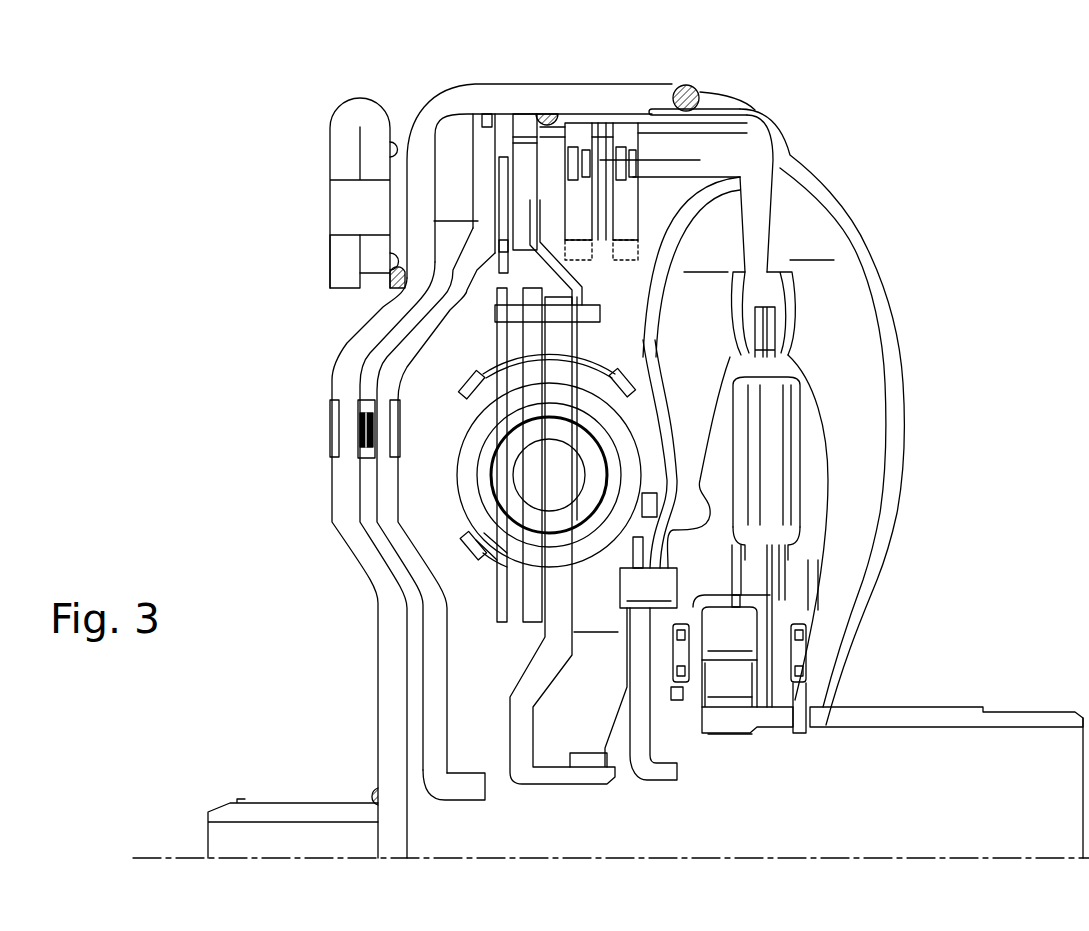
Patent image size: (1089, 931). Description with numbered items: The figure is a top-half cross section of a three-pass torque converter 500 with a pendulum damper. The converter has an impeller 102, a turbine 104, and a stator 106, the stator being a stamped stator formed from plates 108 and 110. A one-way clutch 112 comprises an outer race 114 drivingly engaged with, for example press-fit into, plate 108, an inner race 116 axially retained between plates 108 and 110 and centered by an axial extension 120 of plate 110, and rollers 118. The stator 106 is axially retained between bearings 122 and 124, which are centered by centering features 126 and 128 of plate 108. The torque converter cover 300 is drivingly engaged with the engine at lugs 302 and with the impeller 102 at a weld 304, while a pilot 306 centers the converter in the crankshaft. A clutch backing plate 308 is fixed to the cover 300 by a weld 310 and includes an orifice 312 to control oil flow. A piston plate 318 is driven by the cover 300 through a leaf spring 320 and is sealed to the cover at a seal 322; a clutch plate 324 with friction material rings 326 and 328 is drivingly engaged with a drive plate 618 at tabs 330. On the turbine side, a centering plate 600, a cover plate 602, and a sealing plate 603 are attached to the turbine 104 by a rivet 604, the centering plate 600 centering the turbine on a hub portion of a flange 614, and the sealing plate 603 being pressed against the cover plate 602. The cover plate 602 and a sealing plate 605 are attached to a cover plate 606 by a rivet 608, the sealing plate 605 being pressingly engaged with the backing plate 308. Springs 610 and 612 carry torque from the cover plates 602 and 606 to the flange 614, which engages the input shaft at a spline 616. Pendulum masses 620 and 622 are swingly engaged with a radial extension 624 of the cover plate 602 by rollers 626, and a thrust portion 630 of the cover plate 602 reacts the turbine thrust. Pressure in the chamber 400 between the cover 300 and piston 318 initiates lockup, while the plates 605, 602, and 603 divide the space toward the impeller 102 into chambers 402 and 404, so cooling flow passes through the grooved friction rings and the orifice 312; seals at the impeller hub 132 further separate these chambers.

The impeller 102 is at (813, 248).
The turbine 104 is at (707, 260).
The stator 106 is at (747, 432).
The plate 108 is at (800, 522).
The plate 110 is at (795, 447).
The one-way clutch 112 is at (773, 750).
The outer race 114 is at (743, 664).
The inner race 116 is at (731, 722).
The rollers 118 is at (731, 685).
The axial extension 120 is at (803, 702).
The bearing 122 is at (795, 690).
The bearing 124 is at (815, 565).
The centering feature 126 is at (790, 716).
The centering feature 128 is at (693, 690).
The impeller hub 132 is at (940, 717).
The torque converter cover 300 is at (662, 90).
The lugs 302 is at (362, 110).
The weld 304 is at (690, 94).
The pilot 306 is at (232, 808).
The clutch backing plate 308 is at (524, 122).
The weld 310 is at (533, 112).
The orifice 312 is at (590, 140).
The piston plate 318 is at (397, 538).
The leaf spring 320 is at (360, 400).
The seal 322 is at (482, 110).
The clutch plate 324 is at (513, 148).
The friction material ring 326 is at (518, 190).
The friction material ring 328 is at (510, 198).
The tabs 330 is at (500, 253).
The chamber 400 is at (457, 209).
The chamber 402 is at (568, 540).
The chamber 404 is at (813, 380).
The three-pass torque converter 500 is at (941, 134).
The centering plate 600 is at (587, 757).
The cover plate 602 is at (650, 560).
The sealing plate 603 is at (647, 387).
The rivet 604 is at (648, 674).
The sealing plate 605 is at (597, 258).
The cover plate 606 is at (503, 597).
The rivet 608 is at (497, 316).
The spring 610 is at (497, 468).
The spring 612 is at (500, 420).
The flange 614 is at (537, 683).
The spline 616 is at (572, 786).
The drive plate 618 is at (336, 240).
The pendulum mass 620 is at (762, 157).
The pendulum mass 622 is at (753, 180).
The radial extension 624 is at (600, 227).
The rollers 626 is at (733, 121).
The thrust portion 630 is at (674, 162).